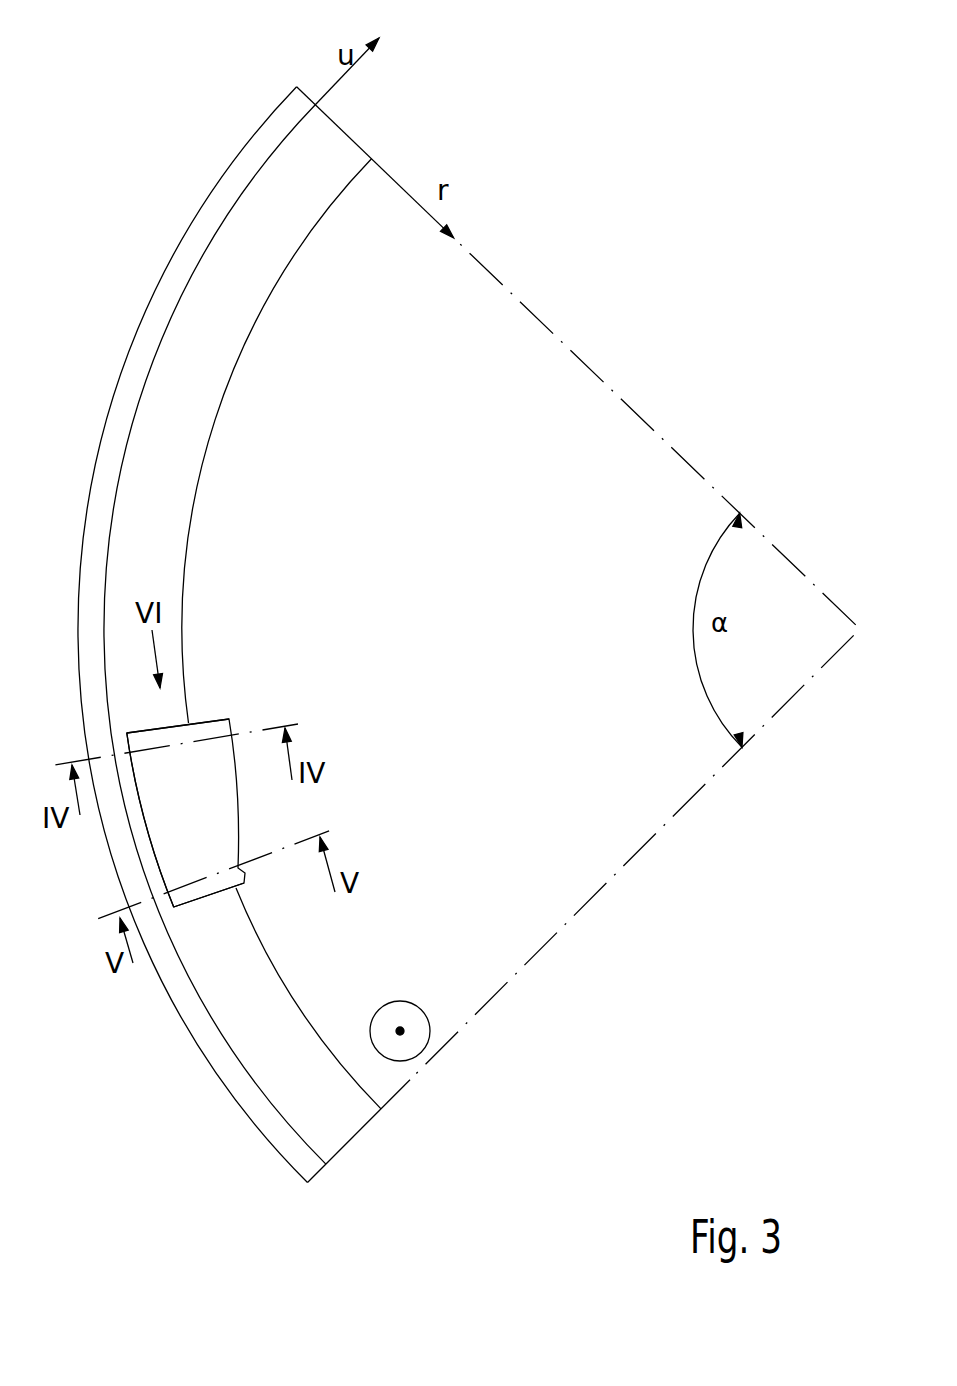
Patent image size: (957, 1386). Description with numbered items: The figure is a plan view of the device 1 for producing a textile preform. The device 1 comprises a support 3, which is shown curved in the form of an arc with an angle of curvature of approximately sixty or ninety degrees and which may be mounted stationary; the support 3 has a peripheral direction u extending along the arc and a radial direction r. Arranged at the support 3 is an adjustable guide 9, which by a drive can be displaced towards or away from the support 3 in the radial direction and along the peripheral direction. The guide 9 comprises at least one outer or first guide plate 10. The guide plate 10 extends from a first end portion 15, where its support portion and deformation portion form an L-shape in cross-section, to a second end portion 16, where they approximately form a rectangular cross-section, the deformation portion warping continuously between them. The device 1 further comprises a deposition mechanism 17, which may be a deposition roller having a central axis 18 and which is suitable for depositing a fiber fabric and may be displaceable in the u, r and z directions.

The device 1 is at (175, 92).
The support 3 is at (192, 220).
The guide 9 is at (243, 813).
The guide plate 10 is at (182, 847).
The first end portion 15 is at (212, 889).
The second end portion 16 is at (184, 722).
The deposition mechanism 17 is at (418, 1003).
The central axis 18 is at (400, 1027).